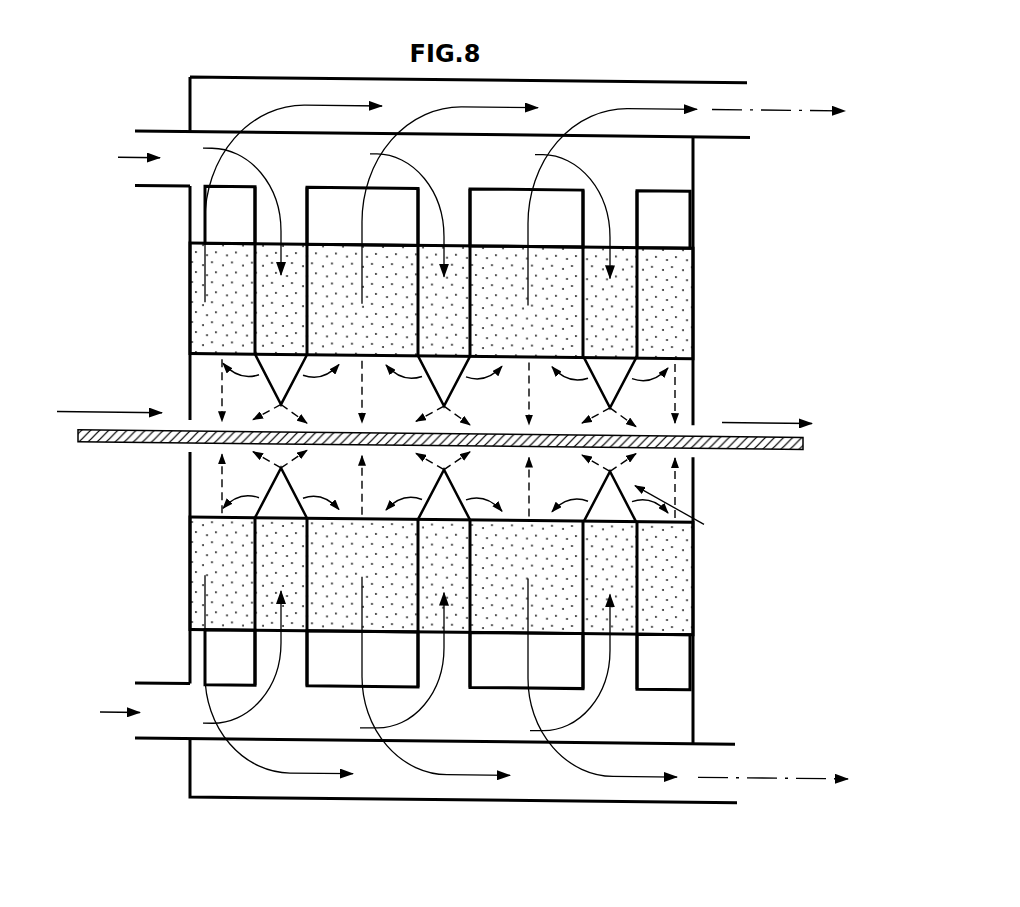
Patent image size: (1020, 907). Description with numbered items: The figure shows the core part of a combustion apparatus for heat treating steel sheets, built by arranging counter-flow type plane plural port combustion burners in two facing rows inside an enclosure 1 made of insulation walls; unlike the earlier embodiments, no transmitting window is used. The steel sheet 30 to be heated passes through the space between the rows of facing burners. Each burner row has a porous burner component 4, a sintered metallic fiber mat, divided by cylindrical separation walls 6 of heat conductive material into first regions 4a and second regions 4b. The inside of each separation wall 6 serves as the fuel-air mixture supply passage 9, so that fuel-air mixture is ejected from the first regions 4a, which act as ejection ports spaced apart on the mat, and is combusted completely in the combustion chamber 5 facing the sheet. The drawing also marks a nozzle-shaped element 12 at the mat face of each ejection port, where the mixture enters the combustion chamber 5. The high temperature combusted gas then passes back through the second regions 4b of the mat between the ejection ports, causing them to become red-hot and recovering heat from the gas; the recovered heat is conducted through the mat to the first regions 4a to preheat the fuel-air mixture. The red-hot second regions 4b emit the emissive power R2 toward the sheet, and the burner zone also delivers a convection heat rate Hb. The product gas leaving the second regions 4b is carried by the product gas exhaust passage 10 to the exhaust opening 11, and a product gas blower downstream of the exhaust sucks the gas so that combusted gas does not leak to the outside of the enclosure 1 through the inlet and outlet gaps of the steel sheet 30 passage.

The enclosure 1 is at (190, 322).
The porous burner component 4 is at (694, 254).
The first region 4a is at (446, 439).
The second region 4b is at (451, 440).
The combustion chamber 5 is at (429, 438).
The cylindrical separation wall 6 is at (305, 203).
The fuel-air mixture supply passage 9 is at (446, 438).
The product gas exhaust passage 10 is at (447, 438).
The exhaust opening 11 is at (747, 118).
The nozzle 12 is at (630, 375).
The steel sheet 30 is at (138, 446).
The emissive power R2 is at (676, 398).
The convection heat rate Hb is at (687, 512).